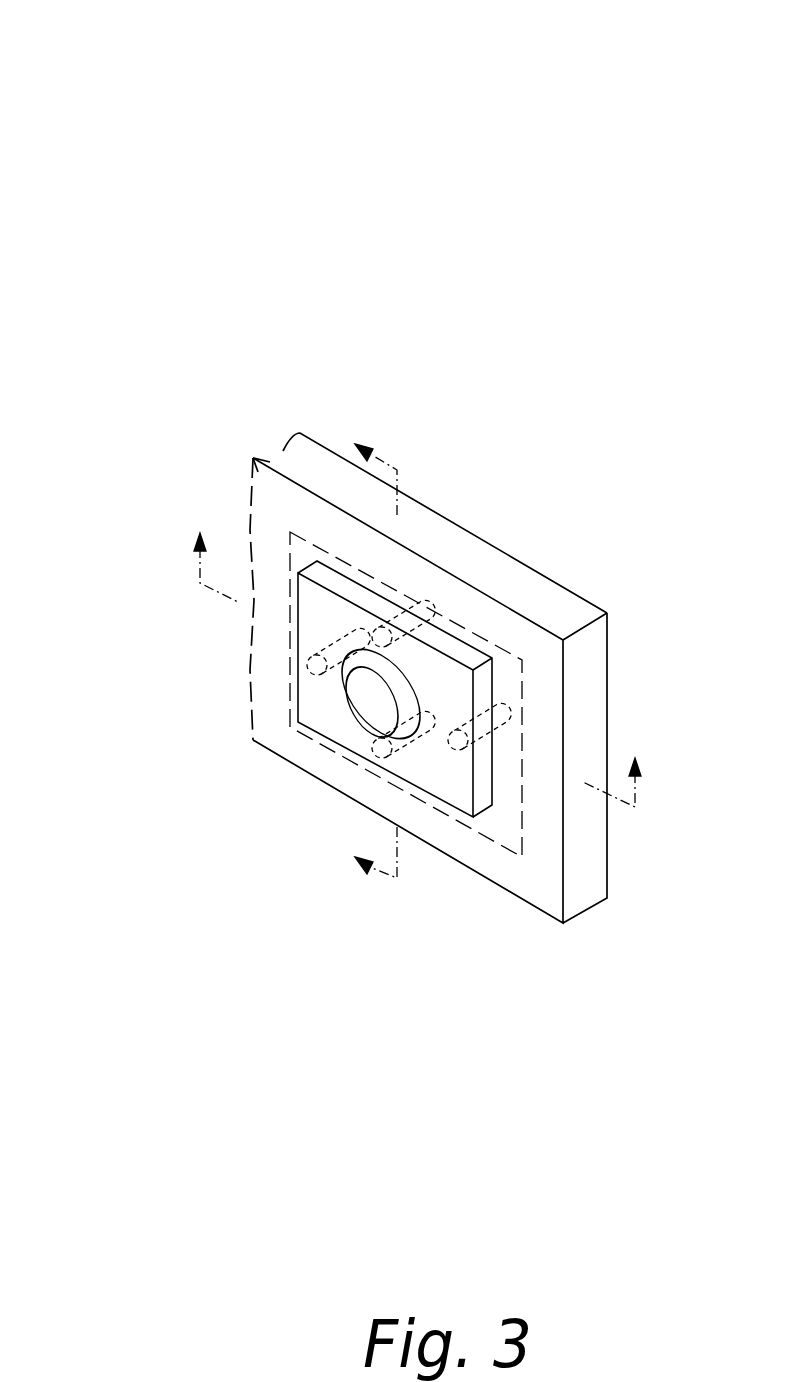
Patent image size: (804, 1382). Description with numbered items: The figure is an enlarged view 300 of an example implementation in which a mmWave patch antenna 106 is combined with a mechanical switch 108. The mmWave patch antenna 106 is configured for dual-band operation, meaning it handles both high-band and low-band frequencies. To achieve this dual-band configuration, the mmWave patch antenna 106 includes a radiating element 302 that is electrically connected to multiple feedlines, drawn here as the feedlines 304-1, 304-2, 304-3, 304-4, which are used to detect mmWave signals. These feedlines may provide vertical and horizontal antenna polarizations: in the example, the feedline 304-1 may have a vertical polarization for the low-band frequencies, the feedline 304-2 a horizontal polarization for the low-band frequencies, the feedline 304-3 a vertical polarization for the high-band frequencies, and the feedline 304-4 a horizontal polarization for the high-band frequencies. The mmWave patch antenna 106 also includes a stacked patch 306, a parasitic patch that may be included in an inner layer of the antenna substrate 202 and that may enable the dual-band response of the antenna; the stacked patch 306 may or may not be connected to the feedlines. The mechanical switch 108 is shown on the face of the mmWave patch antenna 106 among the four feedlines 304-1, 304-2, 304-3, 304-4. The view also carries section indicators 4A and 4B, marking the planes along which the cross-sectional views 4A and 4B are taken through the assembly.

The enlarged view 300 is at (115, 50).
The antenna substrate 202 is at (470, 531).
The radiating element 302 is at (443, 785).
The stacked patch 306 is at (523, 807).
The mmWave patch antenna 106 is at (477, 650).
The mechanical switch 108 is at (350, 715).
The feedline 304-1 is at (382, 755).
The feedline 304-2 is at (453, 734).
The feedline 304-3 is at (381, 630).
The feedline 304-4 is at (312, 668).
The section line 4A is at (418, 654).
The section line 4B is at (357, 649).